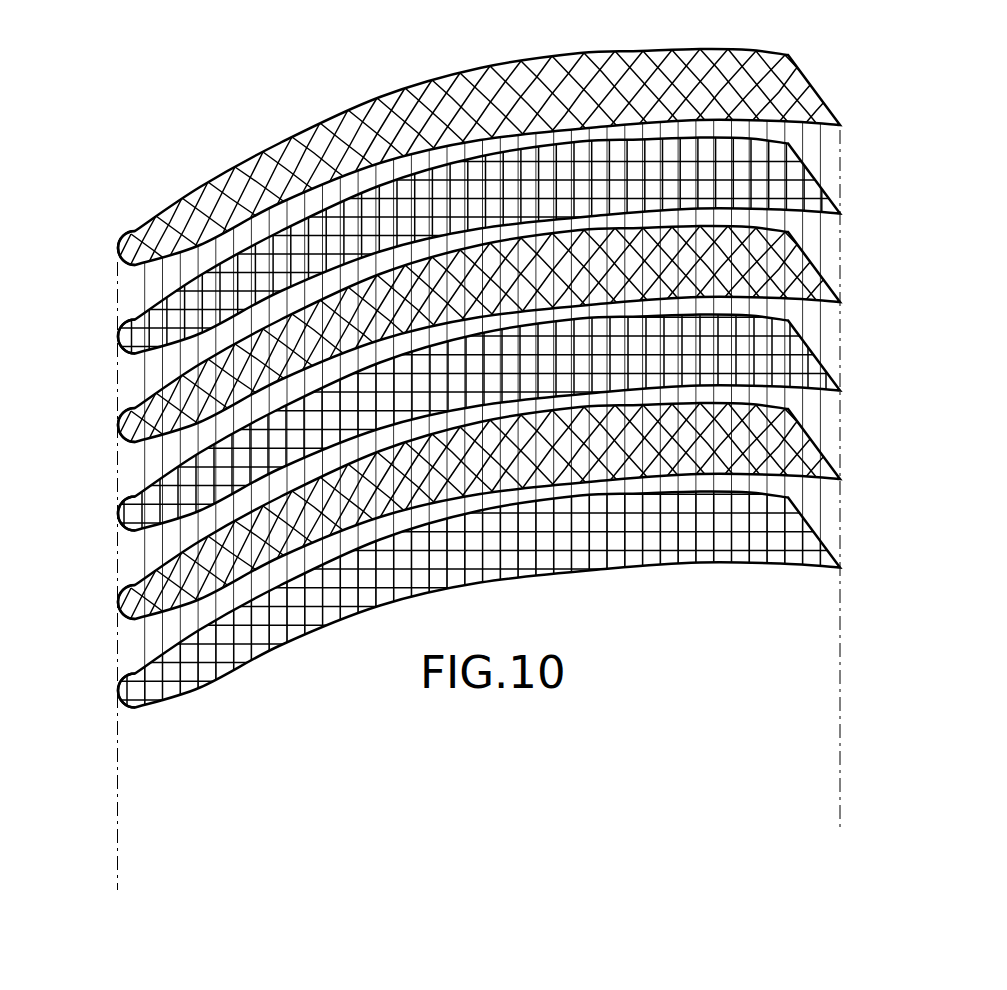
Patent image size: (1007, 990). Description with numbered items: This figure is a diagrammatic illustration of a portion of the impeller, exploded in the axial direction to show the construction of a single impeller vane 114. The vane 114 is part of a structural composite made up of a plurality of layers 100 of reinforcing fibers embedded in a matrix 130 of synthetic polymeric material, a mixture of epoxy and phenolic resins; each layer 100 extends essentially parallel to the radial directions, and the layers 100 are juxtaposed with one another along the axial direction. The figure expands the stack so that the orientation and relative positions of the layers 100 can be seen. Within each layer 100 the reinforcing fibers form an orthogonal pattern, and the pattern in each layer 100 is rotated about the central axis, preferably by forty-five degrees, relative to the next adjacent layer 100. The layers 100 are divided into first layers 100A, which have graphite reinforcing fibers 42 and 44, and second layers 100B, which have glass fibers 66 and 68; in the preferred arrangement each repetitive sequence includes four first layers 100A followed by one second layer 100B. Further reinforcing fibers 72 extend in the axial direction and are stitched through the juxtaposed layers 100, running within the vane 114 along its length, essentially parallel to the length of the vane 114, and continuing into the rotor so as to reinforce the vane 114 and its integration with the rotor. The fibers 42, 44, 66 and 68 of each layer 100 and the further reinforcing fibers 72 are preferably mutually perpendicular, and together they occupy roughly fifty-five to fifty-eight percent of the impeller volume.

The impeller vane 114 is at (727, 42).
The layer 100 is at (510, 361).
The first layer 100A is at (118, 245).
The second layer 100B is at (118, 601).
The matrix 130 is at (572, 70).
The reinforcing fibers 42 is at (452, 80).
The reinforcing fibers 44 is at (380, 108).
The glass fibers 66 is at (665, 460).
The glass fibers 68 is at (688, 456).
The further reinforcing fibers 72 is at (222, 598).